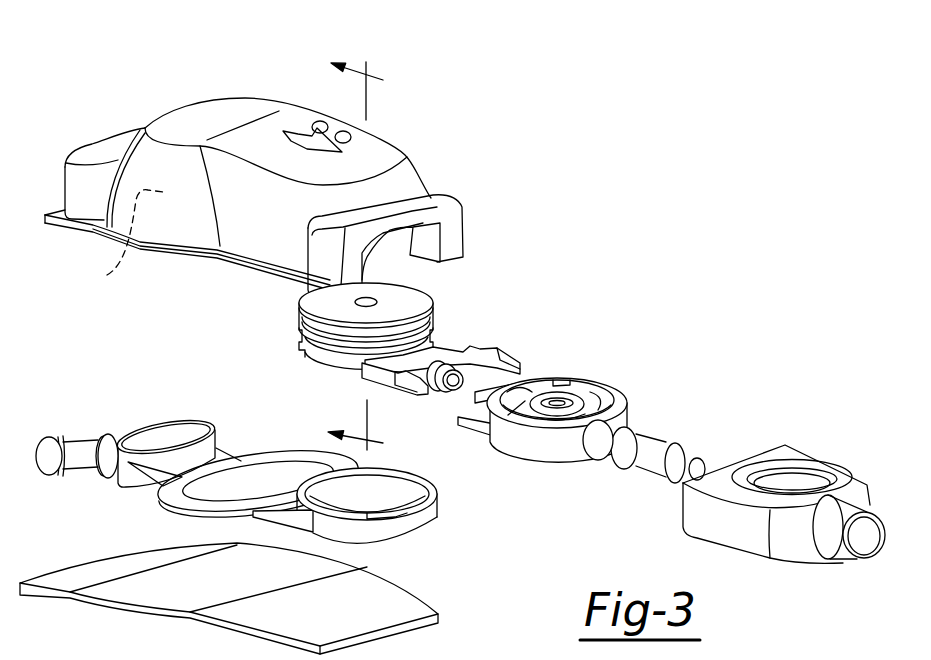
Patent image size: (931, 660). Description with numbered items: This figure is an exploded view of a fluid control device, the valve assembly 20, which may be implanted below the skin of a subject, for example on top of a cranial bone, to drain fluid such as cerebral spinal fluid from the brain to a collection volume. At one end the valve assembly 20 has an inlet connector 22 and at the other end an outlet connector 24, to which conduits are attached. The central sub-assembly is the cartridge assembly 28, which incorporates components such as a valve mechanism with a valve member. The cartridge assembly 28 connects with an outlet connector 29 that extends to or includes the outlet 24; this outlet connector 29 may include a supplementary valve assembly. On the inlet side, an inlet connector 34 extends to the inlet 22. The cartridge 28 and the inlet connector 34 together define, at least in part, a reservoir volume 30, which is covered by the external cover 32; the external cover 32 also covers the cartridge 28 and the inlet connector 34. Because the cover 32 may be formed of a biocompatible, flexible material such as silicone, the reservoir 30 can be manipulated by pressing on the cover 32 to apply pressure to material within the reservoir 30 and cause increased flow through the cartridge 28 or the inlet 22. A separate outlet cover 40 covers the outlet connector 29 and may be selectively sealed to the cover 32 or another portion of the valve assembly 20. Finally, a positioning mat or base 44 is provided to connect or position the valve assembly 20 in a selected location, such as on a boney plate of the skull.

The valve assembly 20 is at (493, 139).
The inlet connector 22 is at (88, 447).
The outlet connector 24 is at (657, 447).
The cartridge assembly 28 is at (455, 327).
The outlet connector 29 is at (593, 383).
The reservoir volume 30 is at (107, 275).
The external cover 32 is at (275, 92).
The inlet connector 34 is at (155, 440).
The outlet cover 40 is at (820, 465).
The positioning mat 44 is at (410, 608).